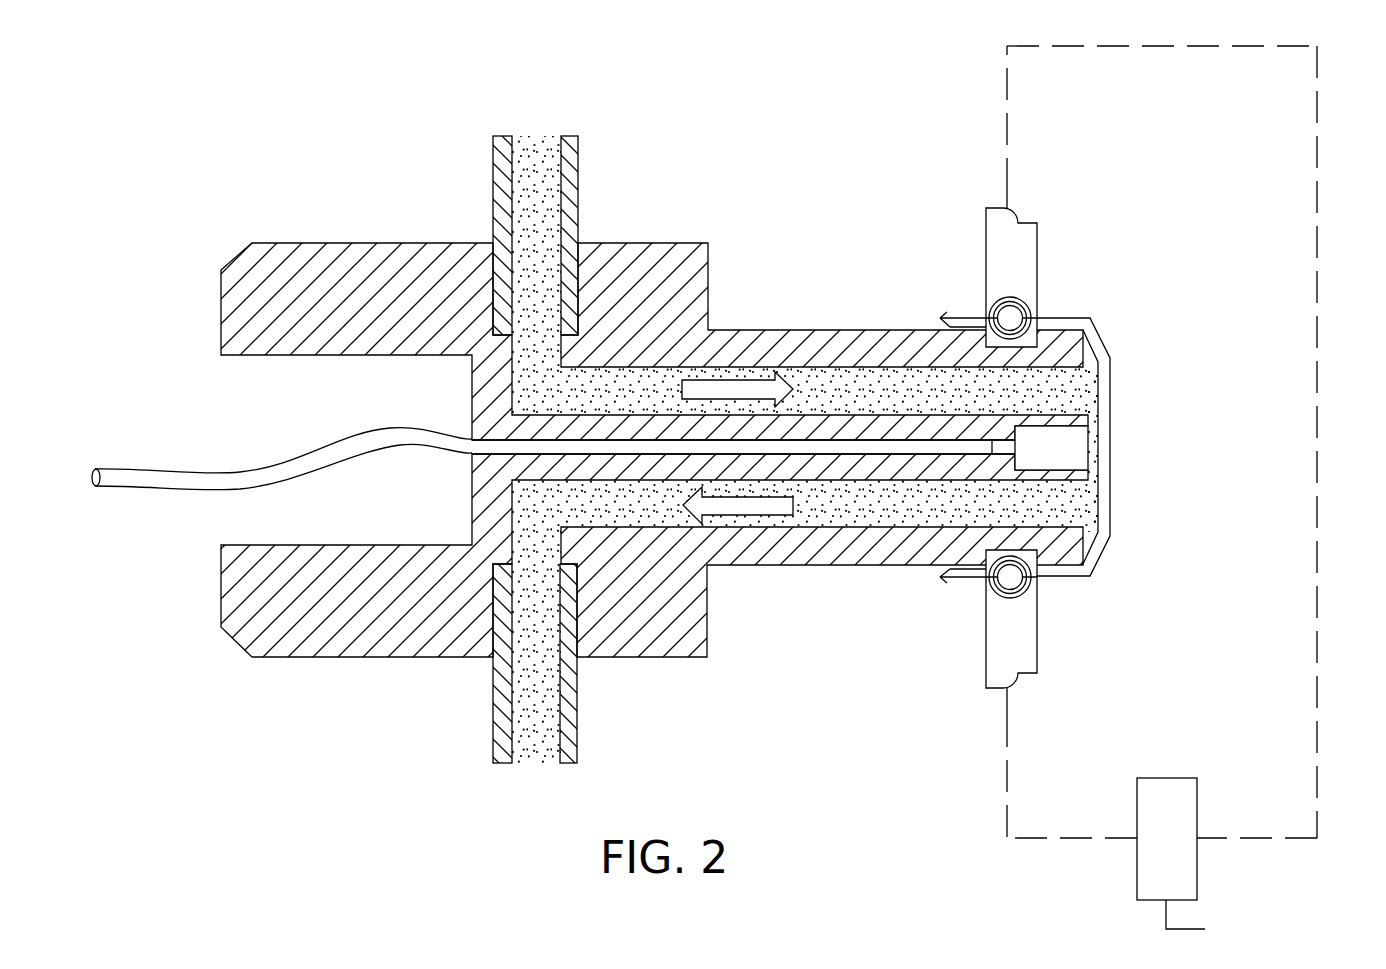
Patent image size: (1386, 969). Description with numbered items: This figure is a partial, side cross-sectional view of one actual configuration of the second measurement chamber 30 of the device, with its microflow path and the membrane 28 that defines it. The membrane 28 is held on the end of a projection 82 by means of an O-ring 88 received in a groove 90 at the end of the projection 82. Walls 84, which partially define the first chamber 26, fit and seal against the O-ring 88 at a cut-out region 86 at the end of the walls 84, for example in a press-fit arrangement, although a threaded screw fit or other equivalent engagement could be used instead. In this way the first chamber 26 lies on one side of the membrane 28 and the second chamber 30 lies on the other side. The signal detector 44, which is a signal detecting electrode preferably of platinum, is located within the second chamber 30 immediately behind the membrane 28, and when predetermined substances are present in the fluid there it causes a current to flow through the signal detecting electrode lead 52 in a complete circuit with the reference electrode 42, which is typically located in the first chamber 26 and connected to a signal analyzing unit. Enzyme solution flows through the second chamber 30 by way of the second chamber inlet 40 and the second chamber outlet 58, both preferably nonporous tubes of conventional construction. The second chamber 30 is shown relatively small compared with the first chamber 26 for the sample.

The first chamber 26 is at (1266, 490).
The membrane 28 is at (1110, 407).
The second chamber 30 is at (1095, 449).
The second chamber inlet 40 is at (585, 224).
The reference electrode 42 is at (1198, 857).
The signal detector 44 is at (1050, 460).
The signal detecting electrode lead 52 is at (150, 497).
The second chamber outlet 58 is at (595, 696).
The projection 82 is at (857, 598).
The walls 84 is at (987, 258).
The cut-out region 86 is at (1037, 302).
The O-ring 88 is at (1008, 312).
The groove 90 is at (1033, 322).